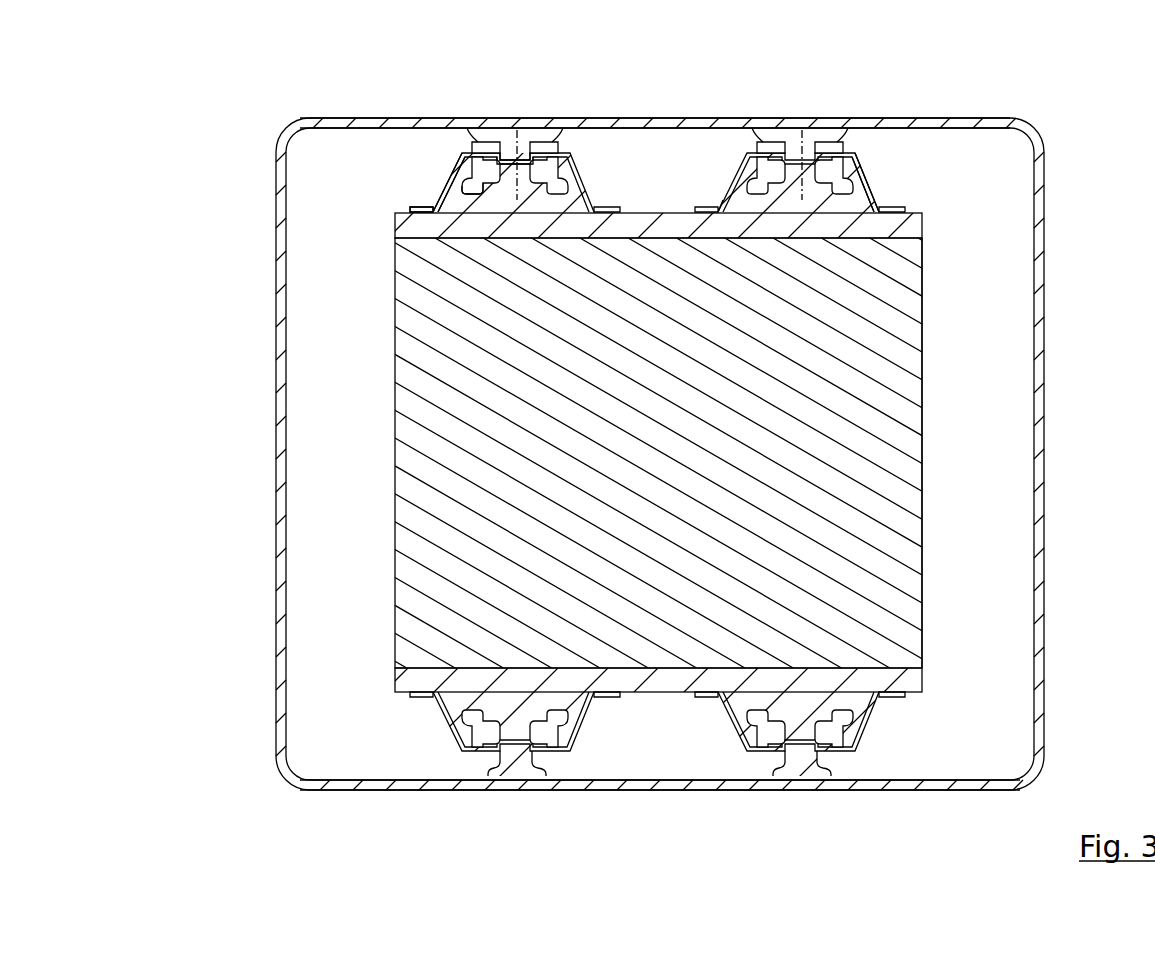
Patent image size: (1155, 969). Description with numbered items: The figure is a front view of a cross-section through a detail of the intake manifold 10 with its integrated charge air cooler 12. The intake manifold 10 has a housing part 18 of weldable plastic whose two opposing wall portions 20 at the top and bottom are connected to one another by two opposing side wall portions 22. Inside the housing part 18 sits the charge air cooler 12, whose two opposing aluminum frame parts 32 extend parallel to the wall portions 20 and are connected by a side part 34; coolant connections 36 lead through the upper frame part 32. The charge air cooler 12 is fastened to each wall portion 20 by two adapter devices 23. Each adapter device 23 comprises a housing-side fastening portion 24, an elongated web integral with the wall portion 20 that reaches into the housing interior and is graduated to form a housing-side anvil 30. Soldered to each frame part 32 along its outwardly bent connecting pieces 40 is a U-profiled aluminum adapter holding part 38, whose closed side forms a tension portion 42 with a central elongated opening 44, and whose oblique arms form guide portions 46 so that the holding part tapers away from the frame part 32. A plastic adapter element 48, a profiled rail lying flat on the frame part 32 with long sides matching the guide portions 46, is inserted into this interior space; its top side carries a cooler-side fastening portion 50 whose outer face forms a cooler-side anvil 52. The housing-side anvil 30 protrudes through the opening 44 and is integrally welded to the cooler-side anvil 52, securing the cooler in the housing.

The intake manifold 10 is at (200, 112).
The charge air cooler 12 is at (390, 410).
The housing part 18 is at (358, 118).
The wall portions 20 is at (676, 118).
The side wall portions 22 is at (280, 365).
The adapter device 23 is at (545, 138).
The housing-side fastening portion 24 is at (519, 150).
The housing-side anvil 30 is at (533, 152).
The frame parts 32 is at (922, 224).
The side part 34 is at (922, 552).
The coolant connections 36 is at (480, 142).
The adapter holding part 38 is at (981, 182).
The connecting pieces 40 is at (716, 145).
The tension portion 42 is at (857, 111).
The opening 44 is at (811, 125).
The guide portion 46 is at (887, 126).
The adapter element 48 is at (452, 201).
The cooler-side fastening portion 50 is at (488, 191).
The cooler-side anvil 52 is at (497, 176).